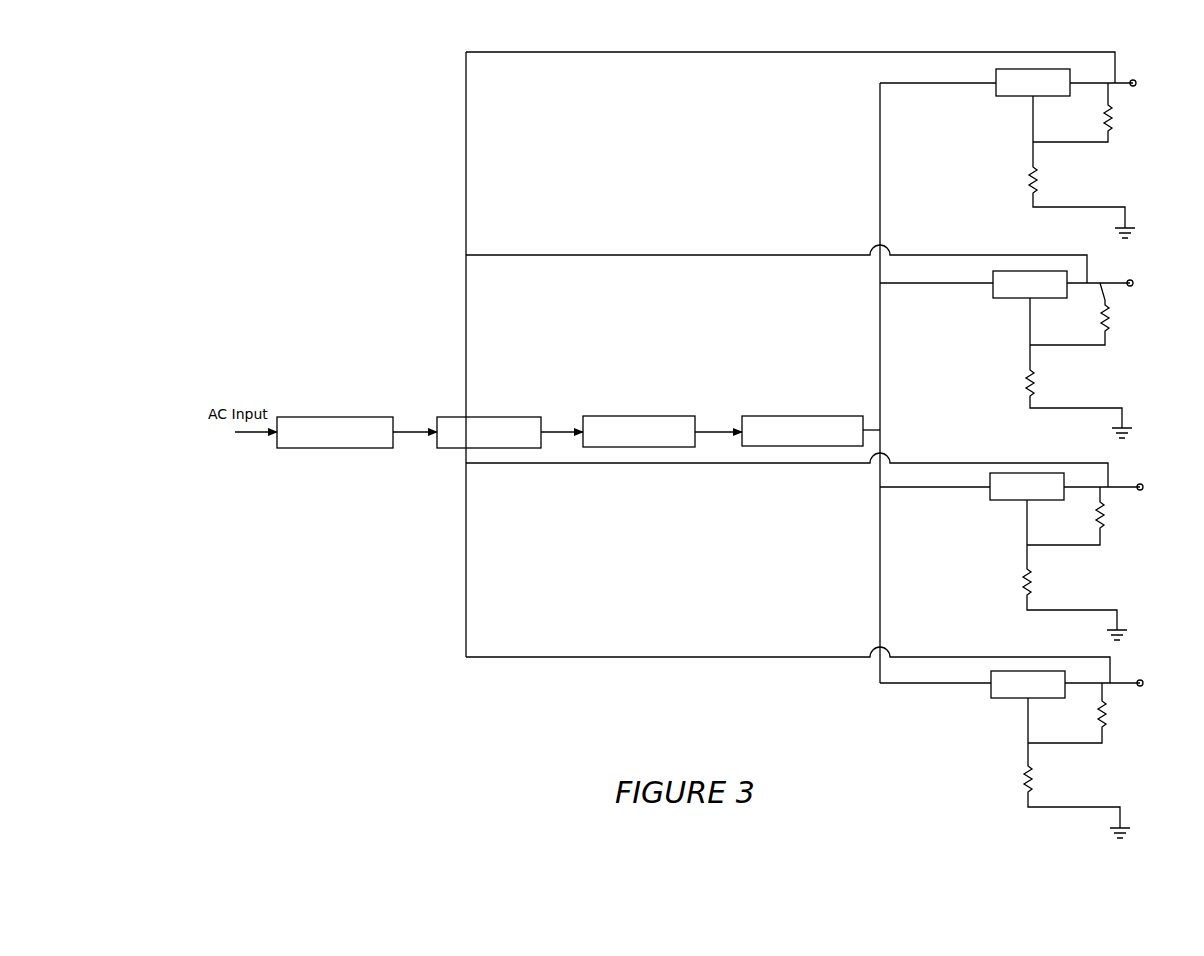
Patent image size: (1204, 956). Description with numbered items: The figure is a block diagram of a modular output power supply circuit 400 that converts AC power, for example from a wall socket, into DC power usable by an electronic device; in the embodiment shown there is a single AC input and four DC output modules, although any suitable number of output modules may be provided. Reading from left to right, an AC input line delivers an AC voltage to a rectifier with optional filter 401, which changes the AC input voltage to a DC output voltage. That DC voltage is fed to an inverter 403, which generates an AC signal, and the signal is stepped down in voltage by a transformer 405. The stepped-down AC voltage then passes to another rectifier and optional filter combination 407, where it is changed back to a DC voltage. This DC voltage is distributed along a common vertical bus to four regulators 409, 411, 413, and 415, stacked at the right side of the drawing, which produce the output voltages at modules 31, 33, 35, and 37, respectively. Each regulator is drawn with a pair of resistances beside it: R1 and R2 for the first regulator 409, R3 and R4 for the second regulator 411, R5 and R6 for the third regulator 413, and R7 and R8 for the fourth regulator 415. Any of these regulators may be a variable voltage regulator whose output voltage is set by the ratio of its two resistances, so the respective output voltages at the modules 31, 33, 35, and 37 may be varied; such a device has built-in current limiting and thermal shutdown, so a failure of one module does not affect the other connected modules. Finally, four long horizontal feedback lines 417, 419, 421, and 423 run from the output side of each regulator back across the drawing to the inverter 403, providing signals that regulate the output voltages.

The modular output power supply circuit 400 is at (310, 97).
The rectifier with optional filter 401 is at (328, 415).
The inverter 403 is at (490, 415).
The transformer 405 is at (642, 414).
The rectifier and optional filter combination 407 is at (792, 413).
The regulator 409 is at (1036, 69).
The regulator 411 is at (996, 298).
The regulator 413 is at (993, 500).
The regulator 415 is at (994, 698).
The feedback line 417 is at (705, 52).
The feedback line 419 is at (697, 256).
The feedback line 421 is at (688, 464).
The feedback line 423 is at (672, 657).
The module 31 is at (1150, 84).
The module 33 is at (1148, 284).
The module 35 is at (1157, 488).
The module 37 is at (1157, 684).
The resistance R1 is at (1087, 112).
The resistance R2 is at (1082, 167).
The resistance R3 is at (1083, 314).
The resistance R4 is at (1079, 368).
The resistance R5 is at (1081, 516).
The resistance R6 is at (1075, 570).
The resistance R7 is at (1082, 713).
The resistance R8 is at (1077, 768).